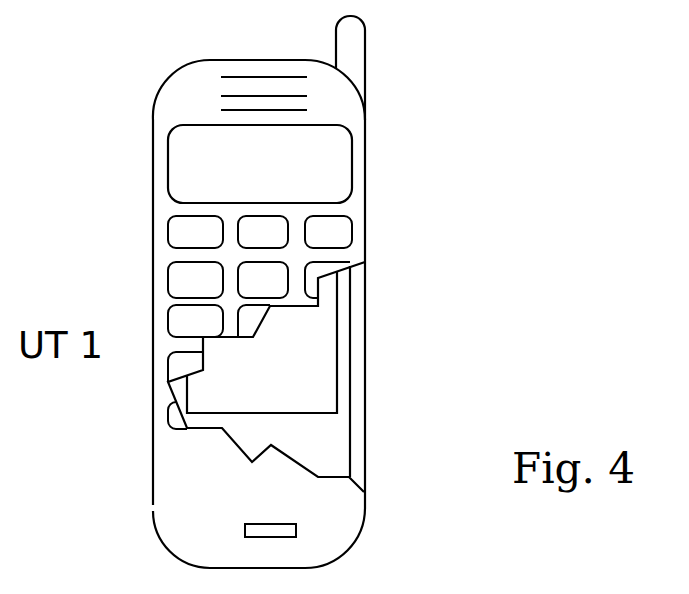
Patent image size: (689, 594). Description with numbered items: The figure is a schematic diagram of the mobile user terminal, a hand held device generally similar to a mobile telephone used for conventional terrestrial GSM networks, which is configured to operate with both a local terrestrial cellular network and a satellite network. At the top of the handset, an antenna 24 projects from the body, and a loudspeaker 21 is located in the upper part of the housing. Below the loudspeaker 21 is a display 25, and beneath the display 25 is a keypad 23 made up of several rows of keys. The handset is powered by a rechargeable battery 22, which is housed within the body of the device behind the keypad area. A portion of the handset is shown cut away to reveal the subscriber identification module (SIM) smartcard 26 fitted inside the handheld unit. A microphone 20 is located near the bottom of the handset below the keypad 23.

The microphone 20 is at (298, 532).
The loudspeaker 21 is at (270, 96).
The battery 22 is at (340, 452).
The keypad 23 is at (340, 233).
The antenna 24 is at (348, 48).
The display 25 is at (322, 172).
The subscriber identification module (SIM) smartcard 26 is at (314, 352).